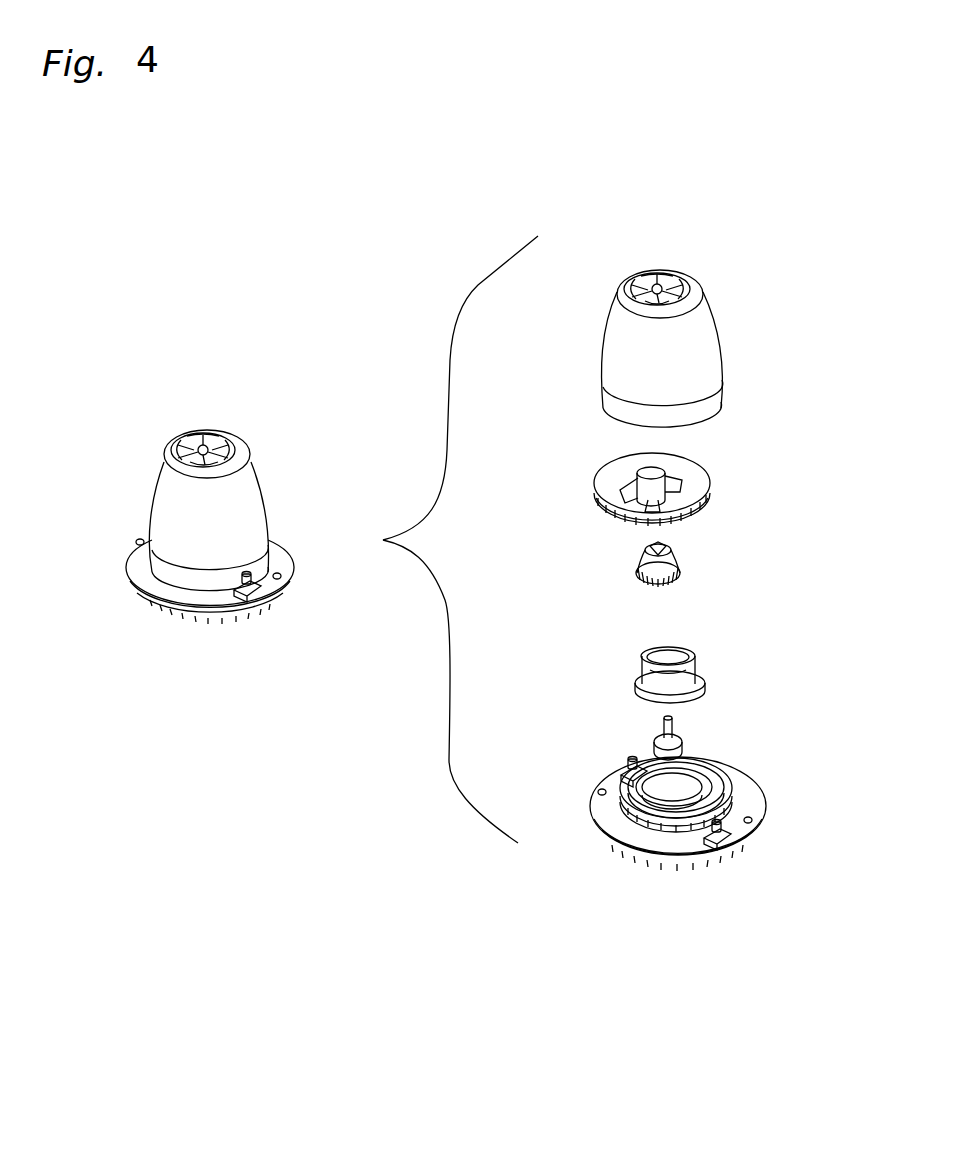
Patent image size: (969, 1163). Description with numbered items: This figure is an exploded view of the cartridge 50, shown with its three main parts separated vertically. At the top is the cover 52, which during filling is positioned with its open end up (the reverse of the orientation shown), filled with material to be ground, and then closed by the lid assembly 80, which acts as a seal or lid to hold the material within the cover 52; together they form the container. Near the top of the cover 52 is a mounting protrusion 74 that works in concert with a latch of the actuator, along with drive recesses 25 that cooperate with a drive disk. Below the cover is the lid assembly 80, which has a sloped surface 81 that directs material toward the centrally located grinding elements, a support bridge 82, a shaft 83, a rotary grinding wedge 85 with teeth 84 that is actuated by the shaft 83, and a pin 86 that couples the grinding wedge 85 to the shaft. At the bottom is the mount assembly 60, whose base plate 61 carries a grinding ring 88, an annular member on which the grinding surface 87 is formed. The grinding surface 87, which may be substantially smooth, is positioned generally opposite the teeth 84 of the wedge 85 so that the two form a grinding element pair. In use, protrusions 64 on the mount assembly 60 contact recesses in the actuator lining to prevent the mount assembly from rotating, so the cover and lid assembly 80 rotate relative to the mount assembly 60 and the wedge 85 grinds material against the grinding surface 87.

The openings 25 is at (645, 272).
The cartridge 50 is at (155, 440).
The cover 52 is at (725, 373).
The mount assembly 60 is at (152, 612).
The base plate 61 is at (748, 812).
The protrusions 64 is at (255, 598).
The mounting protrusion 74 is at (670, 272).
The lid assembly 80 is at (732, 478).
The sloped surface 81 is at (612, 480).
The support bridge 82 is at (642, 473).
The shaft 83 is at (640, 500).
The teeth 84 is at (636, 568).
The rotary grinding wedge 85 is at (668, 563).
The pin 86 is at (680, 740).
The grinding surface 87 is at (640, 660).
The grinding ring 88 is at (692, 676).